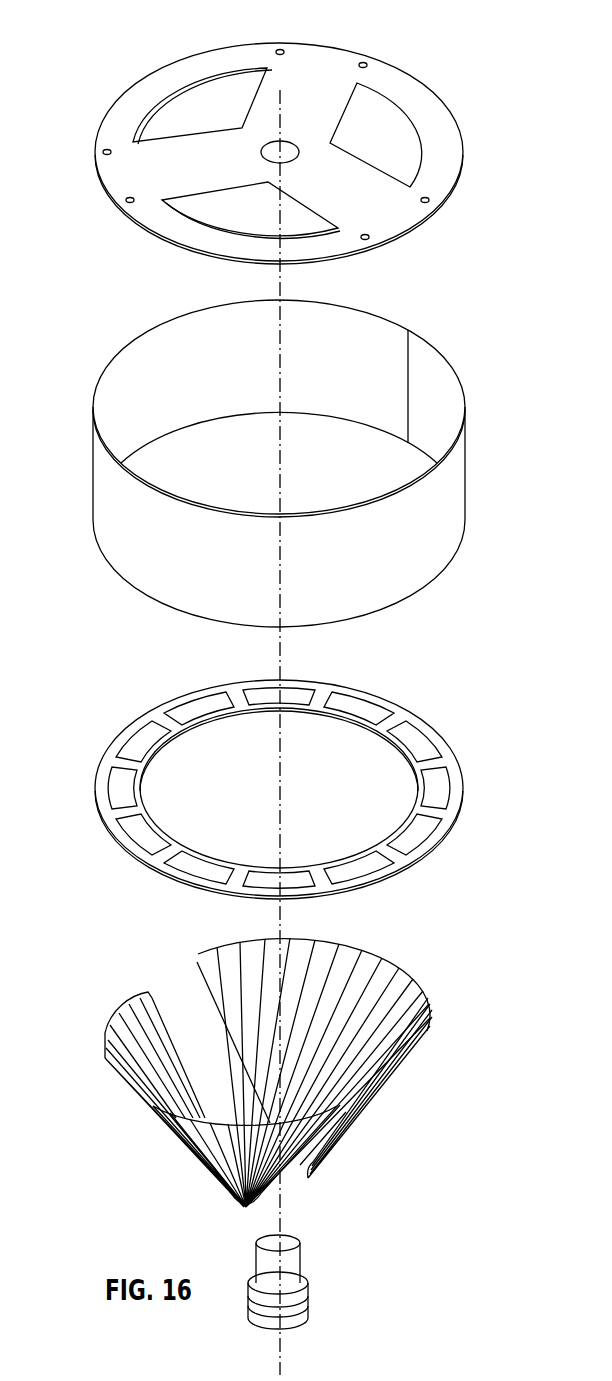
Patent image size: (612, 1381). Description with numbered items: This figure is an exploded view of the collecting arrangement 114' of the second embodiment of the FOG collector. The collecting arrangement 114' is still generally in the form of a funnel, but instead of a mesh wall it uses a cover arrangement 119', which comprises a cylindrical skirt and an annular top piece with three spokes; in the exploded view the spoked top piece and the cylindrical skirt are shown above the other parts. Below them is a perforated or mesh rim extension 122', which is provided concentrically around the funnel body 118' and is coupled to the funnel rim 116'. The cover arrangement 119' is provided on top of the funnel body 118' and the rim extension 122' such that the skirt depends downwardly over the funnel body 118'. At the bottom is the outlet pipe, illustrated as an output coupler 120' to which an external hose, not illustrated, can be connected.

The collecting arrangement 114' is at (165, 688).
The cover arrangement 119' is at (279, 335).
The rim extension 122' is at (279, 789).
The funnel rim 116' is at (228, 1073).
The funnel body 118' is at (270, 1069).
The output coupler 120' is at (310, 1282).